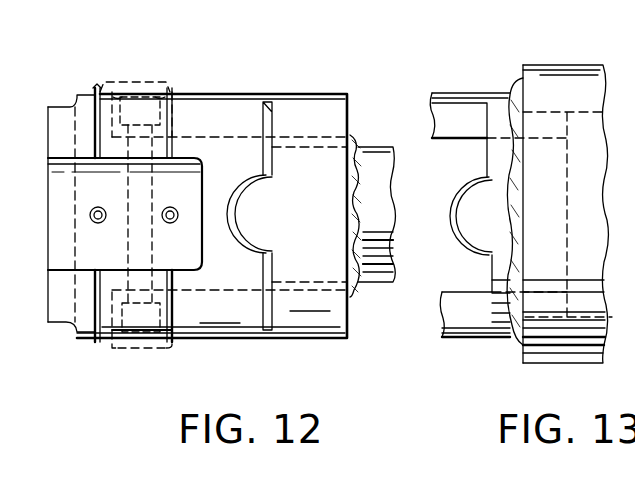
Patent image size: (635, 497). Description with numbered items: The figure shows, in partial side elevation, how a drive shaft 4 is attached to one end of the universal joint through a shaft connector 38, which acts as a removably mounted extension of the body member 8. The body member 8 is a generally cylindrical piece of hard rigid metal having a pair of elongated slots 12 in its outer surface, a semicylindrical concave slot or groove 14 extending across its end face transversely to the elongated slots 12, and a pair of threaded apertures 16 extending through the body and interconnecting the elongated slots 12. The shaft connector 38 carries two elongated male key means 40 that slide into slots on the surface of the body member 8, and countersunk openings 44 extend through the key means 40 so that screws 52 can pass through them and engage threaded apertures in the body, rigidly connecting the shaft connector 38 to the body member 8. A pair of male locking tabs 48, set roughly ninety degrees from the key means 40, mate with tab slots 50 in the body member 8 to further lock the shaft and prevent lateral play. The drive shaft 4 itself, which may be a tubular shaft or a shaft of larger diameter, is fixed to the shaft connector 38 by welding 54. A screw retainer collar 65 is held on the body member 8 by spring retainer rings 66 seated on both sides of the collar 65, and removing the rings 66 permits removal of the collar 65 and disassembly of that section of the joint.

In FIG. 12, the drive shaft 4 is at (380, 203).
In FIG. 13, the drive shaft 4 is at (577, 75).
In FIG. 12, the body member 8 is at (57, 332).
In FIG. 12, the elongated slots 12 is at (88, 160).
In FIG. 12, the concave slot or groove 14 is at (48, 227).
In FIG. 12, the threaded apertures 16 is at (163, 212).
In FIG. 12, the shaft connector 38 is at (300, 121).
In FIG. 13, the shaft connector 38 is at (498, 340).
In FIG. 12, the male key means 40 is at (233, 93).
In FIG. 13, the male key means 40 is at (448, 110).
In FIG. 12, the countersunk openings 44 is at (160, 108).
In FIG. 12, the male locking tabs 48 is at (255, 198).
In FIG. 13, the male locking tabs 48 is at (457, 220).
In FIG. 12, the tab slots 50 is at (272, 240).
In FIG. 12, the screws 52 is at (140, 97).
In FIG. 12, the welding 54 is at (352, 137).
In FIG. 13, the welding 54 is at (512, 88).
In FIG. 12, the screw retainer collar 65 is at (142, 345).
In FIG. 12, the spring retainer rings 66 is at (93, 87).